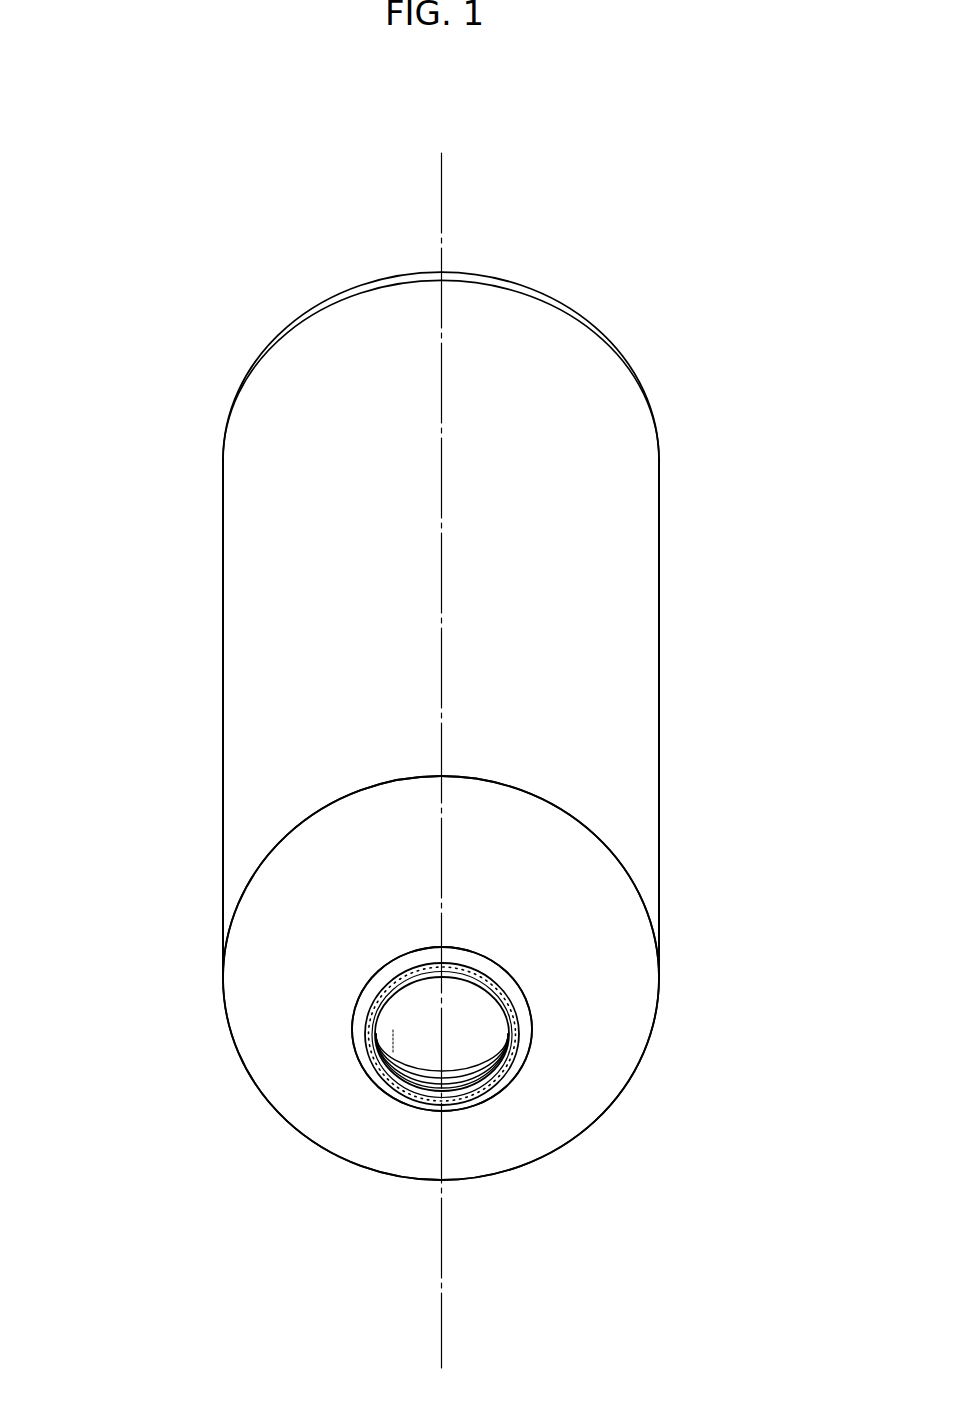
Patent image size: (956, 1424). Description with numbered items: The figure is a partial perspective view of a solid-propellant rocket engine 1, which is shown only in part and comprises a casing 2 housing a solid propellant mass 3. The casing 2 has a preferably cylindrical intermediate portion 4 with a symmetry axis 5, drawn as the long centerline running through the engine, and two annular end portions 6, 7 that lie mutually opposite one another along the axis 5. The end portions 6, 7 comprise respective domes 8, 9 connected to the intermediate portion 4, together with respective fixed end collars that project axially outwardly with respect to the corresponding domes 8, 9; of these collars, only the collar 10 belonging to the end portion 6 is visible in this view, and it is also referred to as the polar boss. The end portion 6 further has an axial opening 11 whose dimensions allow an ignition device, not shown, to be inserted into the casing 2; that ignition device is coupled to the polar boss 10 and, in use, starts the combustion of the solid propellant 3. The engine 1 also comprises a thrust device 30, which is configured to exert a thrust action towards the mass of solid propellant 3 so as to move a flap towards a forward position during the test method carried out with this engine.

The solid-propellant rocket engine 1 is at (147, 311).
The casing 2 is at (222, 637).
The solid propellant mass 3 is at (382, 1076).
The intermediate portion 4 is at (612, 613).
The symmetry axis 5 is at (443, 178).
The annular end portion 6 is at (236, 1043).
The annular end portion 7 is at (310, 307).
The dome 8 is at (555, 1083).
The dome 9 is at (528, 285).
The collar 10 is at (510, 1003).
The axial opening 11 is at (462, 1097).
The thrust device 30 is at (419, 1081).